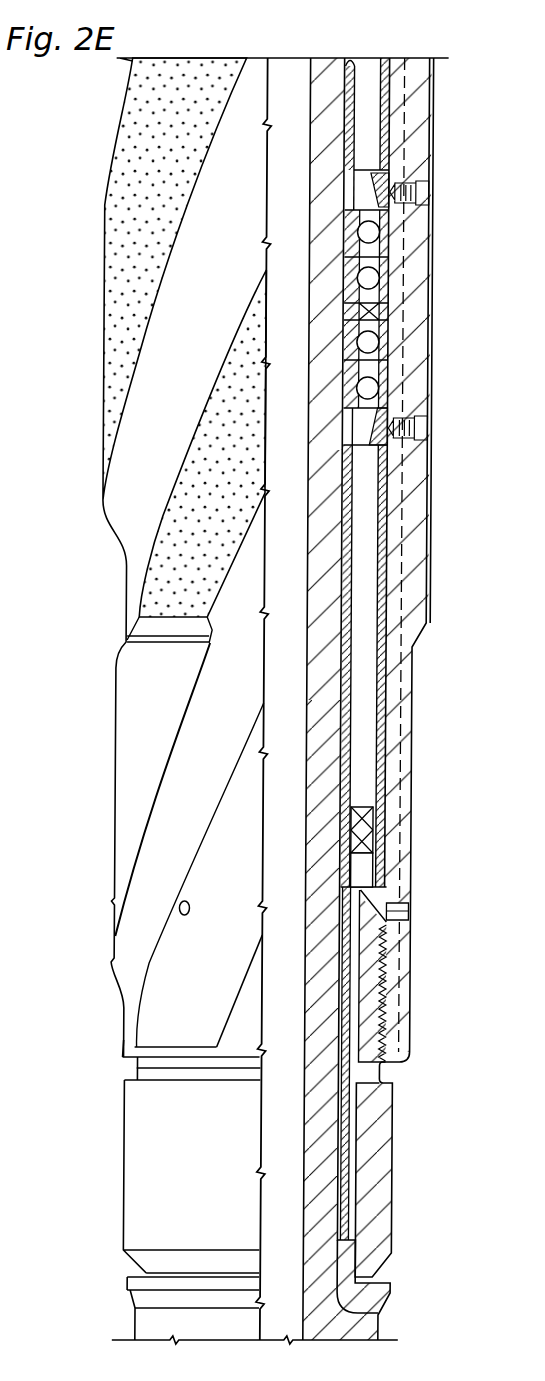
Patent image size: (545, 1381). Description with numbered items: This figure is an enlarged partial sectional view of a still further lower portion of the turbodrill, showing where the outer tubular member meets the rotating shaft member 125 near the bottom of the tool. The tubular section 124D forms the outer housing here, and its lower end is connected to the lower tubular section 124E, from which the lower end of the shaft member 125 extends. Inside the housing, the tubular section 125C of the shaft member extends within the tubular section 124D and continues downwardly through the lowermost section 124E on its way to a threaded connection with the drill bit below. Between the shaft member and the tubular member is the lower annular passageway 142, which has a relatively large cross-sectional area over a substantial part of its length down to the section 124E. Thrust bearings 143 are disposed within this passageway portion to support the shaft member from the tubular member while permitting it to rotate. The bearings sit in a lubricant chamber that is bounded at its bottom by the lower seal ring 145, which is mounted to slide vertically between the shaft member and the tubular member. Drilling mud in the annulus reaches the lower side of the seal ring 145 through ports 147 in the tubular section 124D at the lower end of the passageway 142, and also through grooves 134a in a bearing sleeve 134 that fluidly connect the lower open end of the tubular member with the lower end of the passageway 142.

The lower annular passageway 142 is at (370, 117).
The thrust bearings 143 is at (391, 289).
The tubular section 124D is at (432, 323).
The shaft member 125 is at (355, 560).
The tubular section 125C is at (356, 604).
The lower seal ring 145 is at (378, 824).
The ports 147 is at (415, 911).
The bearing sleeve 134 is at (353, 1031).
The grooves 134a is at (354, 1131).
The lower tubular section 124E is at (401, 1154).